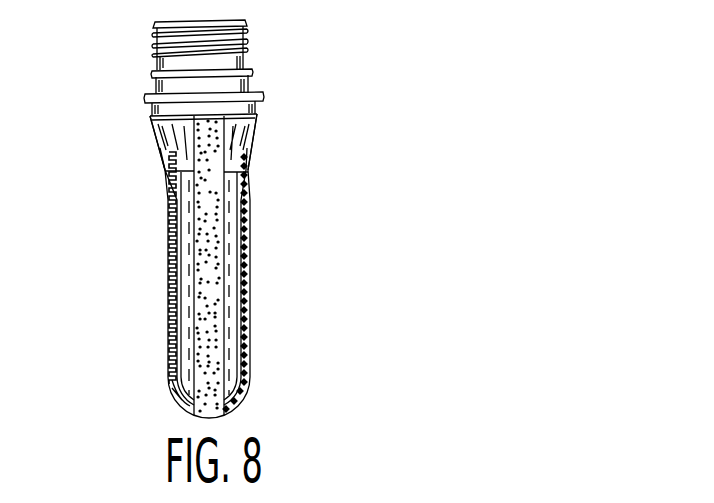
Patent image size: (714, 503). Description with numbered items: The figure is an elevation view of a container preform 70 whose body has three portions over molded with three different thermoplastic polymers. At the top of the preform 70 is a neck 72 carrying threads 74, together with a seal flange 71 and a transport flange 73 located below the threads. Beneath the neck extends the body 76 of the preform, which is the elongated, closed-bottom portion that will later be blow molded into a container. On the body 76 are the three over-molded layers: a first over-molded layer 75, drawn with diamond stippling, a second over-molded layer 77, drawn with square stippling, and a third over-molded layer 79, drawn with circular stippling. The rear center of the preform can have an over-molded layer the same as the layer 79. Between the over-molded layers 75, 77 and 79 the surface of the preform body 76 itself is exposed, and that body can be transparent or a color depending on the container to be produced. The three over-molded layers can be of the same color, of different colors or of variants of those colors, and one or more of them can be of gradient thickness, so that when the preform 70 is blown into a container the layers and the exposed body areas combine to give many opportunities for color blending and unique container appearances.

The preform 70 is at (294, 88).
The seal flange 71 is at (155, 73).
The neck 72 is at (153, 90).
The transport flange 73 is at (158, 103).
The threads 74 is at (243, 34).
The over-molded layer 75 is at (242, 252).
The body 76 is at (230, 193).
The over-molded layer 77 is at (168, 305).
The over-molded layer 79 is at (216, 326).